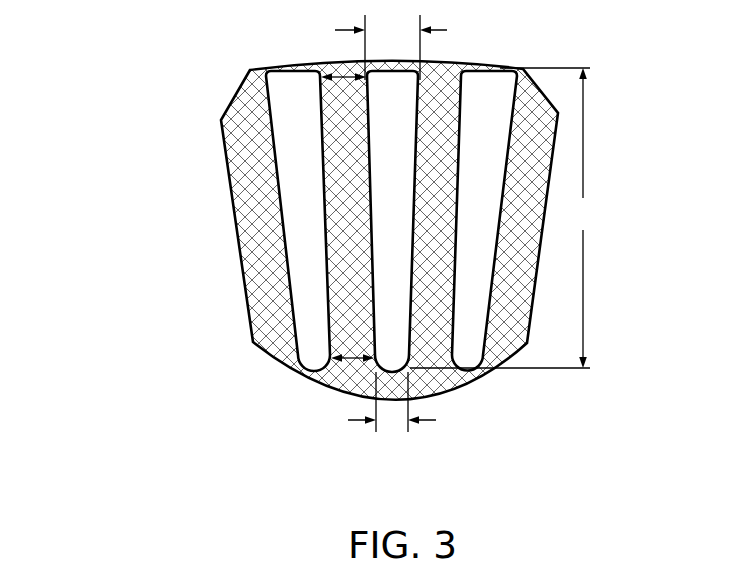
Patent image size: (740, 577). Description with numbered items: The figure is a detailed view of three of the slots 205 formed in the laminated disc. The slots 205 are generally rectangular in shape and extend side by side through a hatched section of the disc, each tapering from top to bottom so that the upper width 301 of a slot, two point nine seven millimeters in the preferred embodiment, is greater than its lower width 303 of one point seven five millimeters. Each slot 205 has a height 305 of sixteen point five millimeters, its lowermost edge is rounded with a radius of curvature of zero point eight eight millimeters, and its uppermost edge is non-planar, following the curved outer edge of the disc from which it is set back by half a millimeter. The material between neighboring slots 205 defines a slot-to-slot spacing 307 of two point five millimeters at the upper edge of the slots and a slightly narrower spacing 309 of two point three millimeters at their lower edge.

The slots 205 is at (472, 137).
The upper width 301 is at (391, 47).
The lower width 303 is at (414, 405).
The height 305 is at (507, 218).
The spacing 307 is at (339, 66).
The spacing 309 is at (353, 368).